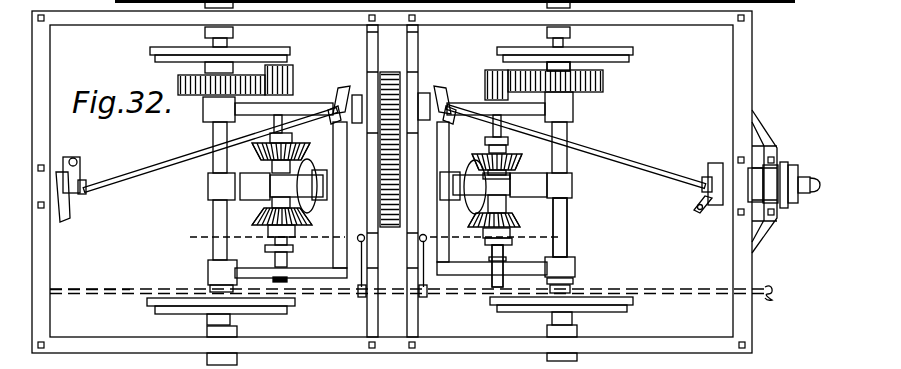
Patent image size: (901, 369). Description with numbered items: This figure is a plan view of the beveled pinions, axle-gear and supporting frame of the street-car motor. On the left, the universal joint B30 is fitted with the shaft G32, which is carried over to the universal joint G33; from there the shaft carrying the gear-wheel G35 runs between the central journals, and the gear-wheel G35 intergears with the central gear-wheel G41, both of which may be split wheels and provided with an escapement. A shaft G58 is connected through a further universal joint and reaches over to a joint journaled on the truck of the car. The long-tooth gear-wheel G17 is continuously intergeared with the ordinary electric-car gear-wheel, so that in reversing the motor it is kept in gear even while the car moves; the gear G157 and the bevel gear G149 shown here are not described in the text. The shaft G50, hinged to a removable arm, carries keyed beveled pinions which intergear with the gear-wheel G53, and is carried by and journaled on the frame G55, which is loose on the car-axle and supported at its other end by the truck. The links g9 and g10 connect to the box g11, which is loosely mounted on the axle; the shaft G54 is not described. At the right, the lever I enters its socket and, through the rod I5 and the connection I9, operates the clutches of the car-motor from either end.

The universal joint B30 is at (72, 146).
The shaft G32 is at (116, 180).
The long-tooth gear-wheel G17 is at (488, 88).
The universal joint G33 is at (352, 98).
The gear-wheel G35 is at (388, 80).
The gear wheel G157 is at (572, 79).
The frame G55 is at (540, 110).
The shaft G58 is at (583, 149).
The bevel gear G149 is at (462, 160).
The link g10 is at (525, 178).
The box g11 is at (572, 190).
The link g9 is at (518, 198).
The shaft G54 is at (566, 241).
The shaft G50 is at (500, 258).
The gear-wheel G53 is at (533, 271).
The central gear-wheel G41 is at (396, 228).
The socket connection I9 is at (90, 307).
The rod I5 is at (772, 298).
The lever I is at (801, 176).